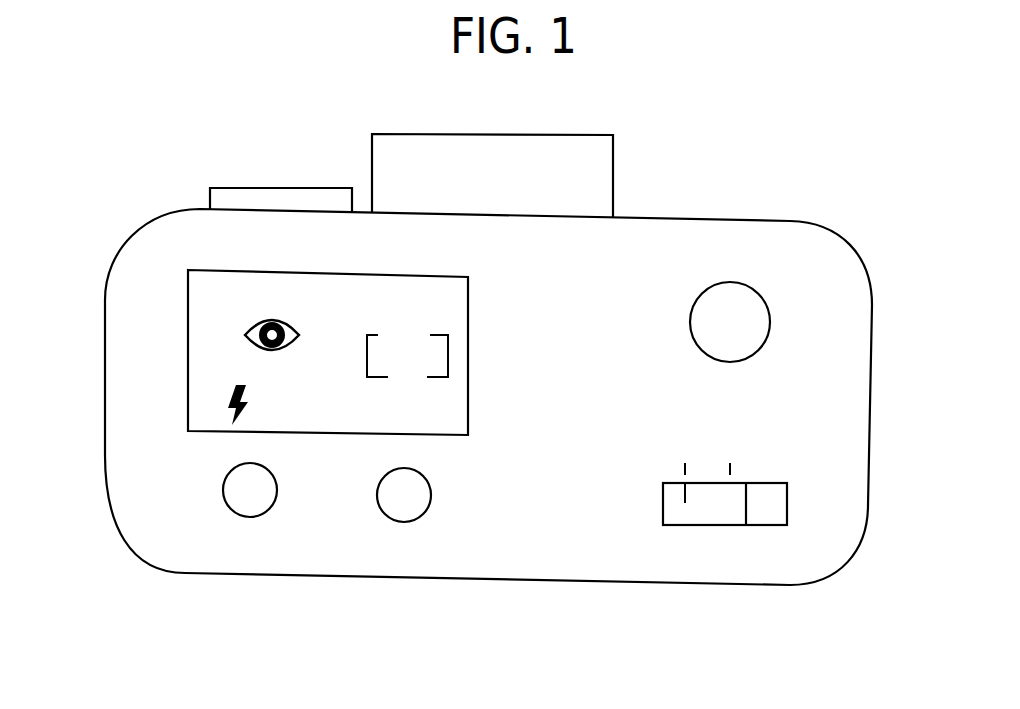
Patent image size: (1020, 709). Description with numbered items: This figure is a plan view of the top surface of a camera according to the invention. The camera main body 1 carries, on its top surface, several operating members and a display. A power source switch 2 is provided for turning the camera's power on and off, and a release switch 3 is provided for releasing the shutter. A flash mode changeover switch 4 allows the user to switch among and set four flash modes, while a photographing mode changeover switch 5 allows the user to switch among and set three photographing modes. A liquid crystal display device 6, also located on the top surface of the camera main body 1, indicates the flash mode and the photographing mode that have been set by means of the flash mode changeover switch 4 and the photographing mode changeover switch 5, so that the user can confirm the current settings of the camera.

The camera main body 1 is at (872, 324).
The power source switch 2 is at (705, 505).
The release switch 3 is at (731, 302).
The flash mode changeover switch 4 is at (245, 493).
The photographing mode changeover switch 5 is at (403, 498).
The liquid crystal display device 6 is at (186, 330).